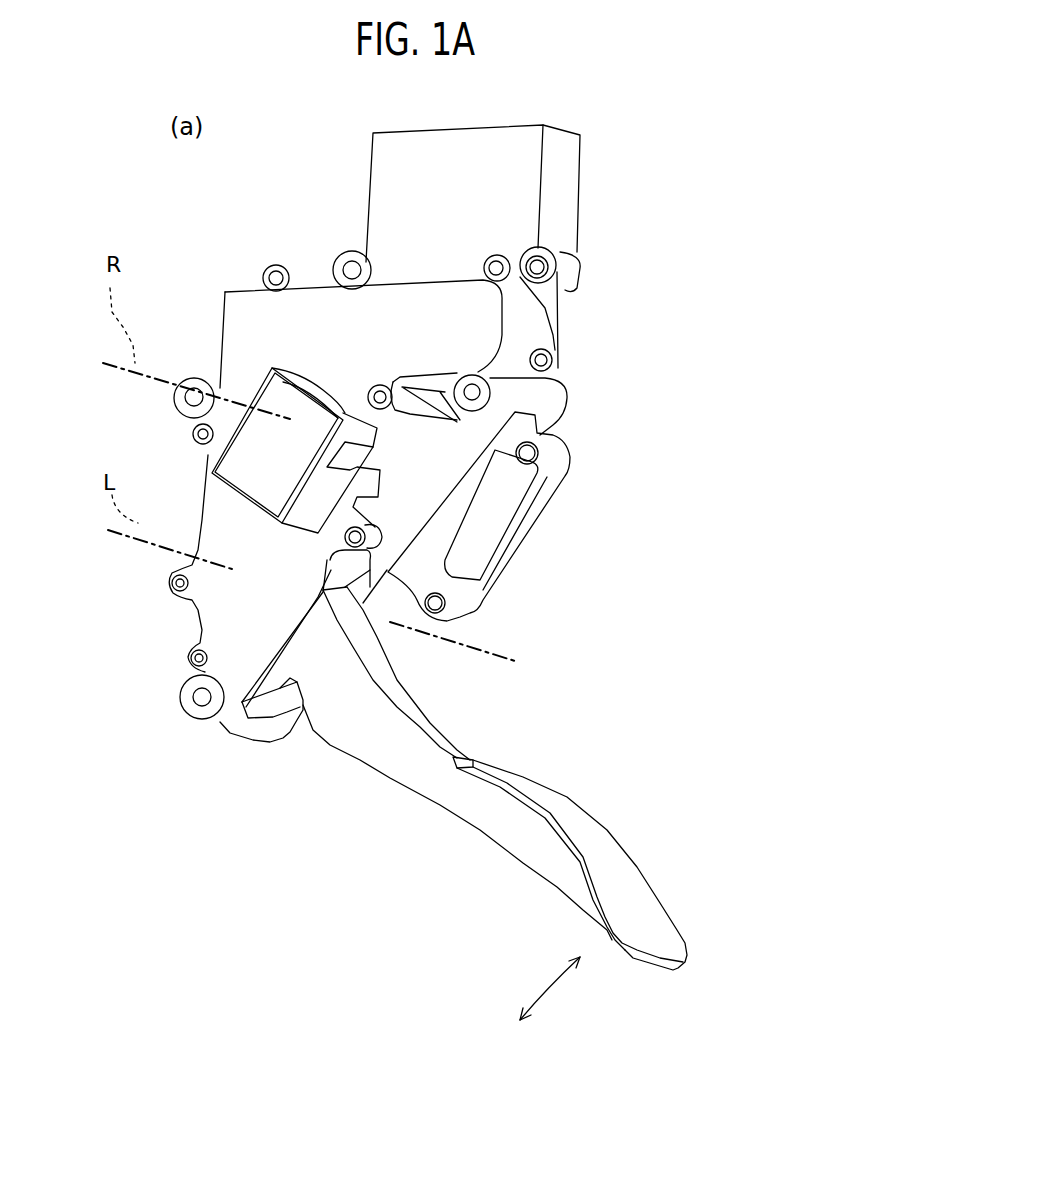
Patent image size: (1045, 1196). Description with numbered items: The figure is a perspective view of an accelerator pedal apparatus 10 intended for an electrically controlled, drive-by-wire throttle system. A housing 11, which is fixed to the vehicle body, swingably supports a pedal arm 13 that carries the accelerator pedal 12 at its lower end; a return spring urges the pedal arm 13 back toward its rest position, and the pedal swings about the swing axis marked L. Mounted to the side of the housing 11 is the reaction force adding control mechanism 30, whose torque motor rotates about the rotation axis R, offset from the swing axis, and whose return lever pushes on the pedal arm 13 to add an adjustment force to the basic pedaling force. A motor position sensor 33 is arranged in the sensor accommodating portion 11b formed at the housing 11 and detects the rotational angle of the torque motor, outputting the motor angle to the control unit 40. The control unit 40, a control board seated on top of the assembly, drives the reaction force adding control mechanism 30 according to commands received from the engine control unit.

The accelerator pedal apparatus 10 is at (300, 242).
The housing 11 is at (510, 320).
The sensor accommodating portion 11b is at (290, 520).
The accelerator pedal 12 is at (625, 863).
The pedal arm 13 is at (417, 768).
The reaction force adding control mechanism 30 is at (562, 546).
The motor position sensor (MPS) 33 is at (262, 461).
The control unit 40 is at (592, 137).